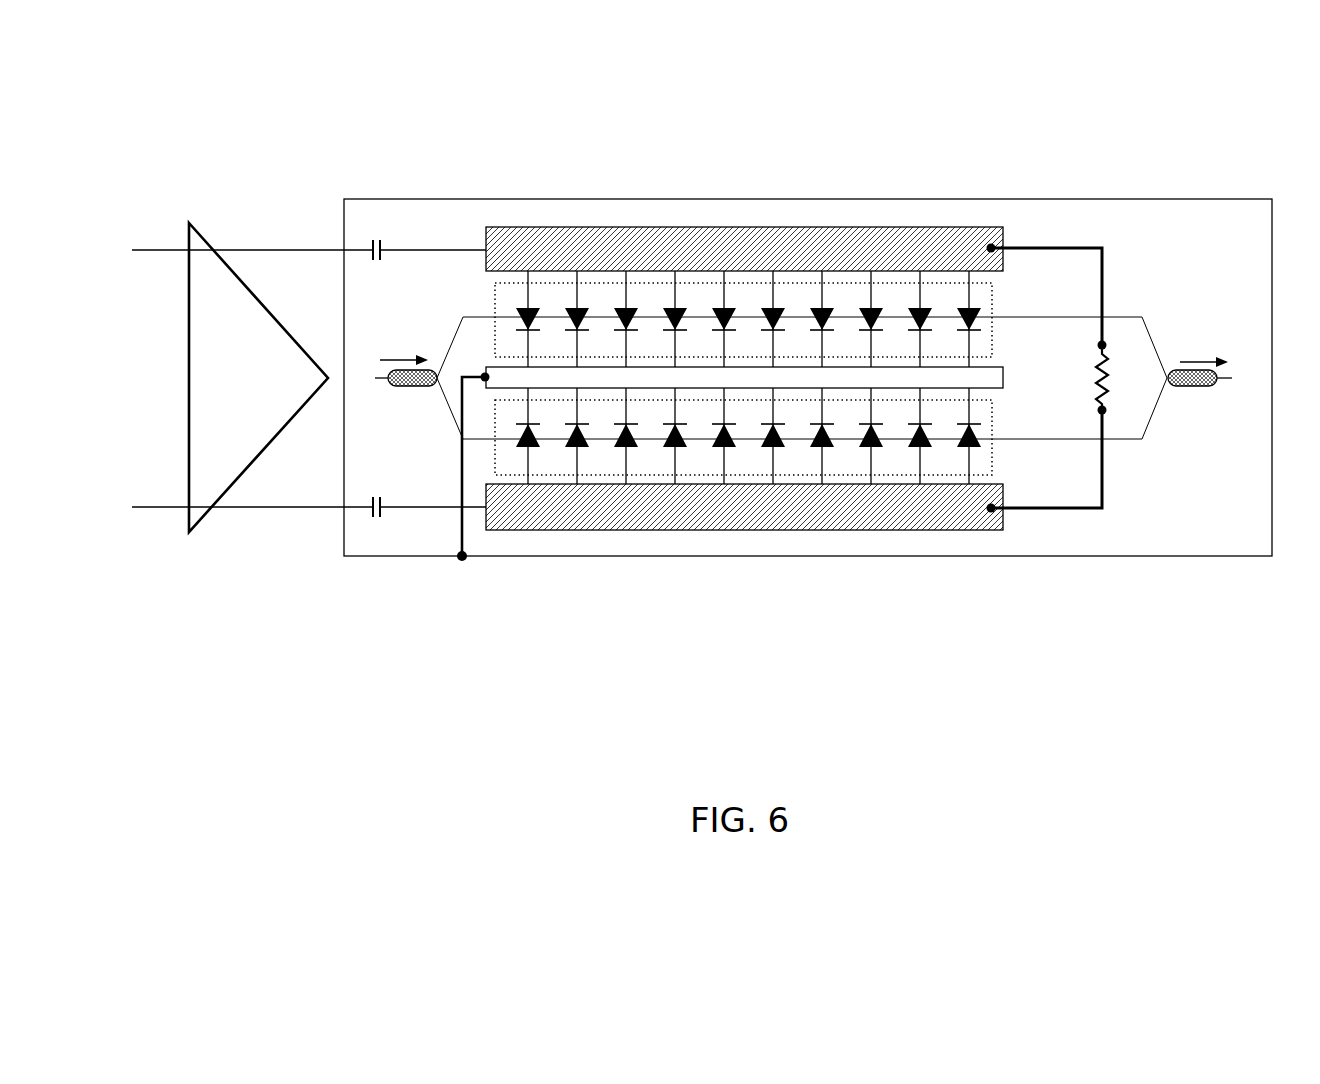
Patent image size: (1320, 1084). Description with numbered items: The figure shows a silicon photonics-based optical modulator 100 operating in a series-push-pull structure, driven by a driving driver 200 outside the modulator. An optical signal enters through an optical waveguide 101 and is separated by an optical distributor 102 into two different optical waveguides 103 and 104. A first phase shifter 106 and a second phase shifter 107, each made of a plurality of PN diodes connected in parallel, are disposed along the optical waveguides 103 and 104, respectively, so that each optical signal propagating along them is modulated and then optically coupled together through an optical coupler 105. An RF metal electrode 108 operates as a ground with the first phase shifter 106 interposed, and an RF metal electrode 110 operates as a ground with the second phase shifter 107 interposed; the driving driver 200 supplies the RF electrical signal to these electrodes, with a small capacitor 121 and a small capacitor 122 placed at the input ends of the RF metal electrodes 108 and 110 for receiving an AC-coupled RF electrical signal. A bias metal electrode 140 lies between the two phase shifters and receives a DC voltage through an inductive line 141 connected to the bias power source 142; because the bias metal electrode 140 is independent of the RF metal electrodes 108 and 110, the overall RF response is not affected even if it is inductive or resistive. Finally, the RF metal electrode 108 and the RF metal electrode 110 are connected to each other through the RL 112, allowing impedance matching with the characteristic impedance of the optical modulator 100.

The optical modulator 100 is at (795, 198).
The driving driver 200 is at (216, 238).
The first capacitor 121 is at (385, 240).
The small capacitor 122 is at (387, 497).
The RF metal electrode 108 is at (1003, 232).
The RF metal electrode 110 is at (1003, 490).
The bias metal electrode 140 is at (995, 367).
The first phase shifter 106 is at (992, 292).
The second phase shifter 107 is at (992, 460).
The optical waveguide 103 is at (462, 322).
The optical waveguide 104 is at (460, 434).
The optical waveguide 101 is at (378, 378).
The optical distributor 102 is at (412, 386).
The optical coupler 105 is at (1195, 387).
The RL 112 is at (1098, 391).
The inductive line 141 is at (461, 528).
The bias power source VBIAS 142 is at (460, 560).